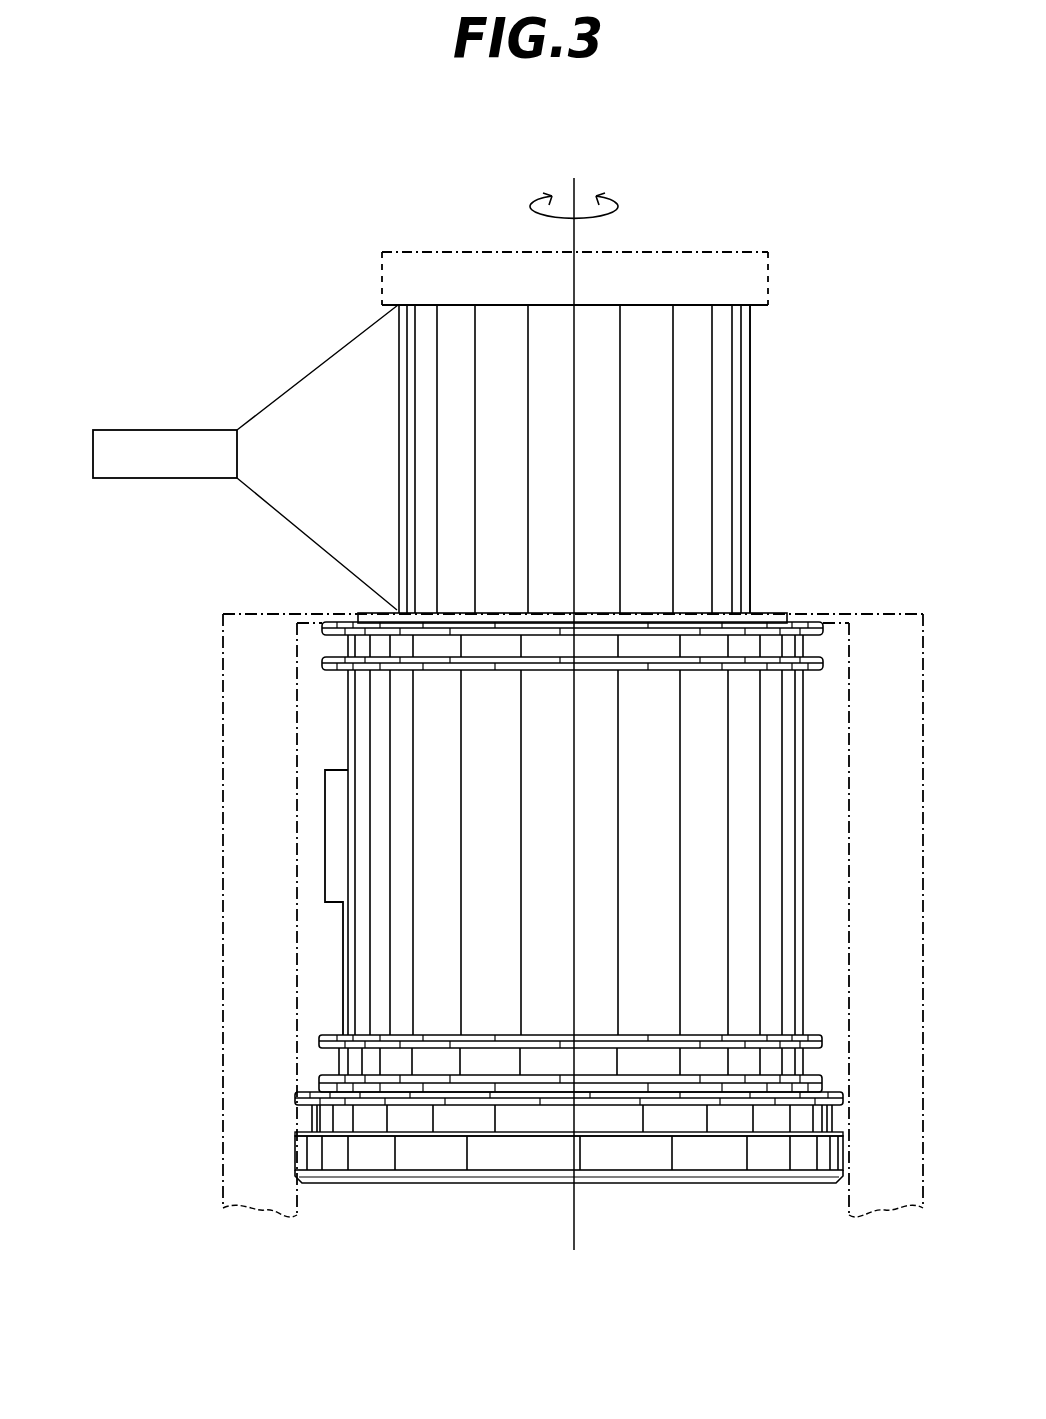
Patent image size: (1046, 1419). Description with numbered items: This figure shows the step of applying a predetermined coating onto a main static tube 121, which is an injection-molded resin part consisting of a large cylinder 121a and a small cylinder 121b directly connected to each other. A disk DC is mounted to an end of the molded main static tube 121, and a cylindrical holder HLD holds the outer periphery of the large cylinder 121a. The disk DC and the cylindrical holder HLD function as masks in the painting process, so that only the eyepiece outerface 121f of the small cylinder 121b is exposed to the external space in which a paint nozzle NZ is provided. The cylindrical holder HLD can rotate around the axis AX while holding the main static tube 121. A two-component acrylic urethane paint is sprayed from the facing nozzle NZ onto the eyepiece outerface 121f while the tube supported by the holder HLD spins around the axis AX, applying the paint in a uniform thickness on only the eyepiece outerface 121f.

The main static tube 121 is at (723, 1183).
The large cylinder 121a is at (348, 735).
The small cylinder 121b is at (725, 342).
The eyepiece outerface 121f is at (750, 447).
The disk DC is at (442, 252).
The axis AX is at (574, 700).
The paint nozzle NZ is at (170, 430).
The cylindrical holder HLD is at (222, 1035).